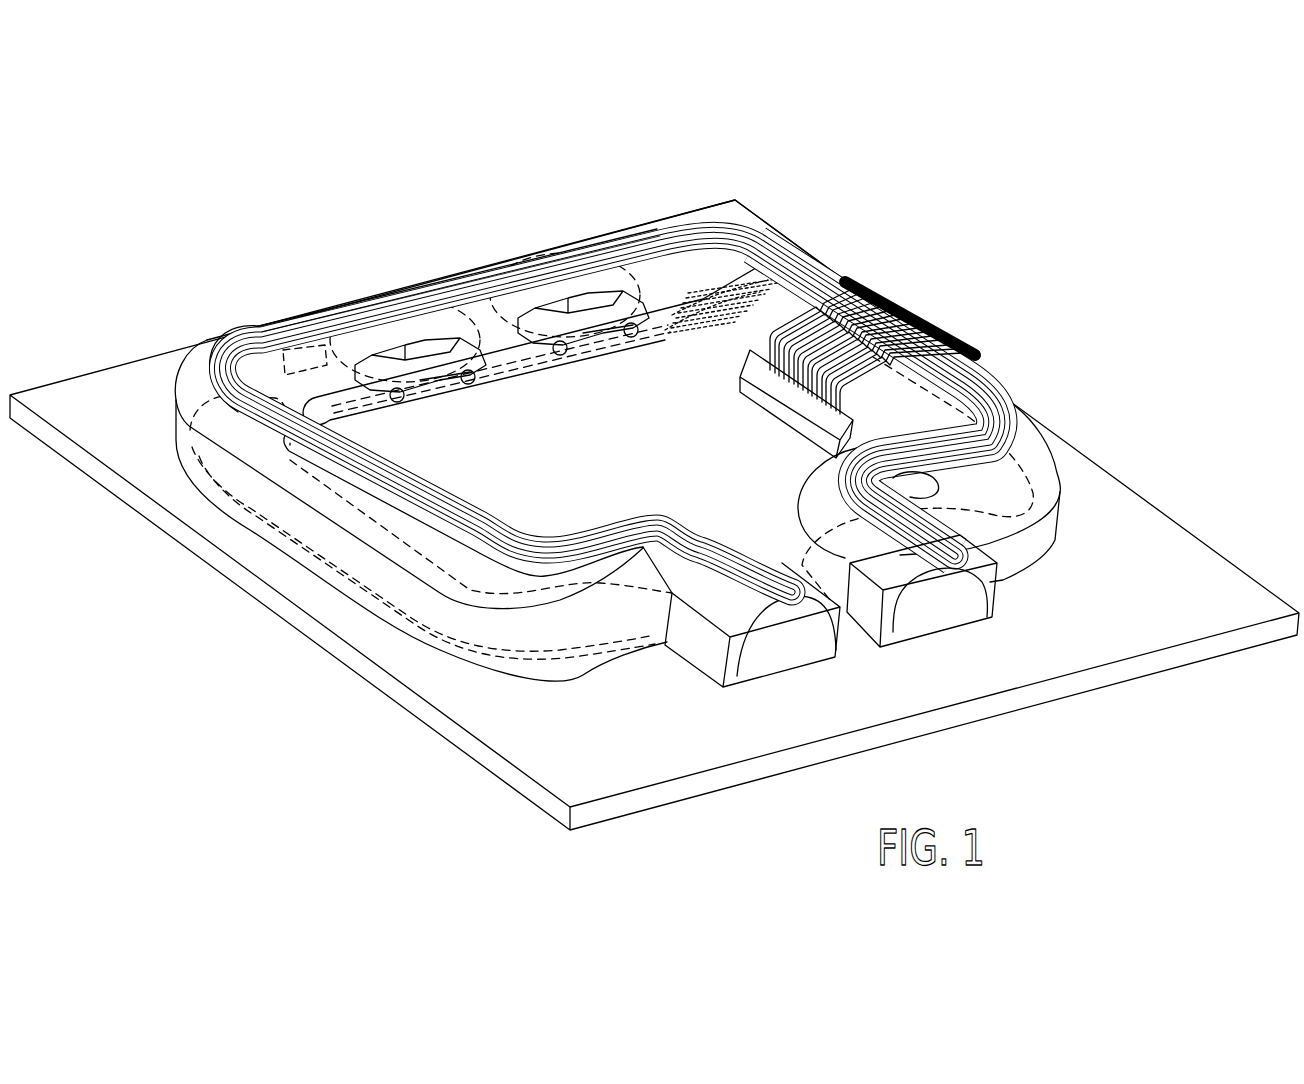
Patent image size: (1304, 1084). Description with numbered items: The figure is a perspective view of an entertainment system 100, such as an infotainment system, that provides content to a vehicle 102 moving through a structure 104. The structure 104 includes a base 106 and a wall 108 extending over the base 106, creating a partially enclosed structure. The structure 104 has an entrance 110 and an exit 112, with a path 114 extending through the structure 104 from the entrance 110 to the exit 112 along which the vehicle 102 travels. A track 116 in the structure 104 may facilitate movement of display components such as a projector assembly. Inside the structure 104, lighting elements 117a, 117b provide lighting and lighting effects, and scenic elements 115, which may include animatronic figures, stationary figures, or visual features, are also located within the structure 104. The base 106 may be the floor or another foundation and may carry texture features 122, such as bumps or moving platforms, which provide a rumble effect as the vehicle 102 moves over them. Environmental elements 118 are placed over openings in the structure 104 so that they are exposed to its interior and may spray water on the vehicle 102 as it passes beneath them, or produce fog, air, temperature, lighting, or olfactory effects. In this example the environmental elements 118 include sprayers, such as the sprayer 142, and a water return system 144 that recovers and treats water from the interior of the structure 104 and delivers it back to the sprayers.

The entertainment system 100 is at (1009, 181).
The vehicle 102 is at (548, 285).
The structure 104 is at (1047, 422).
The base 106 is at (920, 622).
The wall 108 is at (1042, 520).
The entrance 110 is at (725, 655).
The exit 112 is at (997, 578).
The path 114 is at (774, 294).
The scenic elements 115 is at (303, 327).
The track 116 is at (334, 320).
The lighting element 117a is at (388, 320).
The lighting element 117b is at (540, 290).
The environmental elements 118 is at (951, 299).
The texture features 122 is at (655, 235).
The sprayer 142 is at (968, 345).
The water return system 144 is at (790, 407).